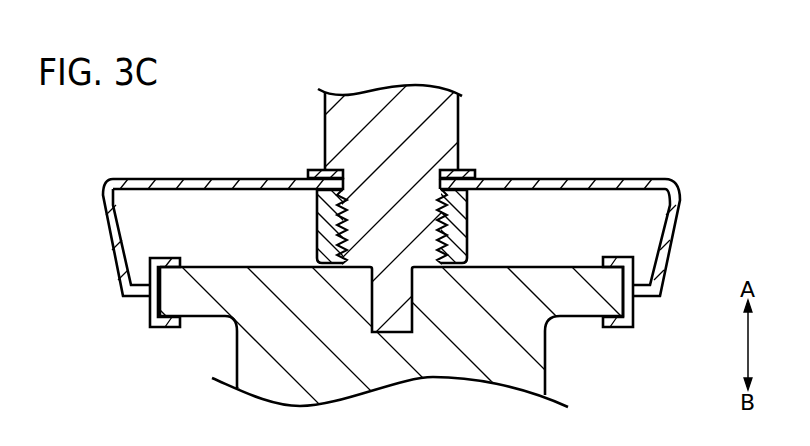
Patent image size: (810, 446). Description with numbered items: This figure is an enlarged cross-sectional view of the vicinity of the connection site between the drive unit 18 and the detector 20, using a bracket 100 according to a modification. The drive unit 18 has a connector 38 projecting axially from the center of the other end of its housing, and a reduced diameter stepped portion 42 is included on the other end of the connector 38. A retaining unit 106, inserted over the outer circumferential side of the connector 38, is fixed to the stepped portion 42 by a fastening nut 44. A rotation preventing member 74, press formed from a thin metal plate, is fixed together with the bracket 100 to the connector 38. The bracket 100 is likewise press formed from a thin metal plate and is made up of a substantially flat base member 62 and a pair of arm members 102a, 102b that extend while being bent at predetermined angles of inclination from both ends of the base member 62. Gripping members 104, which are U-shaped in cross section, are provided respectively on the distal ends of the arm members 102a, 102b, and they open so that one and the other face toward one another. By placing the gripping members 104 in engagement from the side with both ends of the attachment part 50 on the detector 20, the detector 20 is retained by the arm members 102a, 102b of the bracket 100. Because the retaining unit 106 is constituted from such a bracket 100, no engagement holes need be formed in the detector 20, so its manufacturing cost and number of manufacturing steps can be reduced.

The drive unit 18 is at (450, 223).
The detector 20 is at (419, 315).
The connector 38 is at (376, 100).
The stepped portion 42 is at (312, 176).
The fastening nut 44 is at (460, 232).
The attachment part 50 is at (568, 275).
The base member 62 is at (275, 190).
The rotation preventing member 74 is at (474, 169).
The bracket 100 is at (391, 206).
The arm member 102a is at (113, 237).
The arm member 102b is at (667, 233).
The gripping member 104 is at (167, 320).
The retaining unit 106 is at (389, 183).